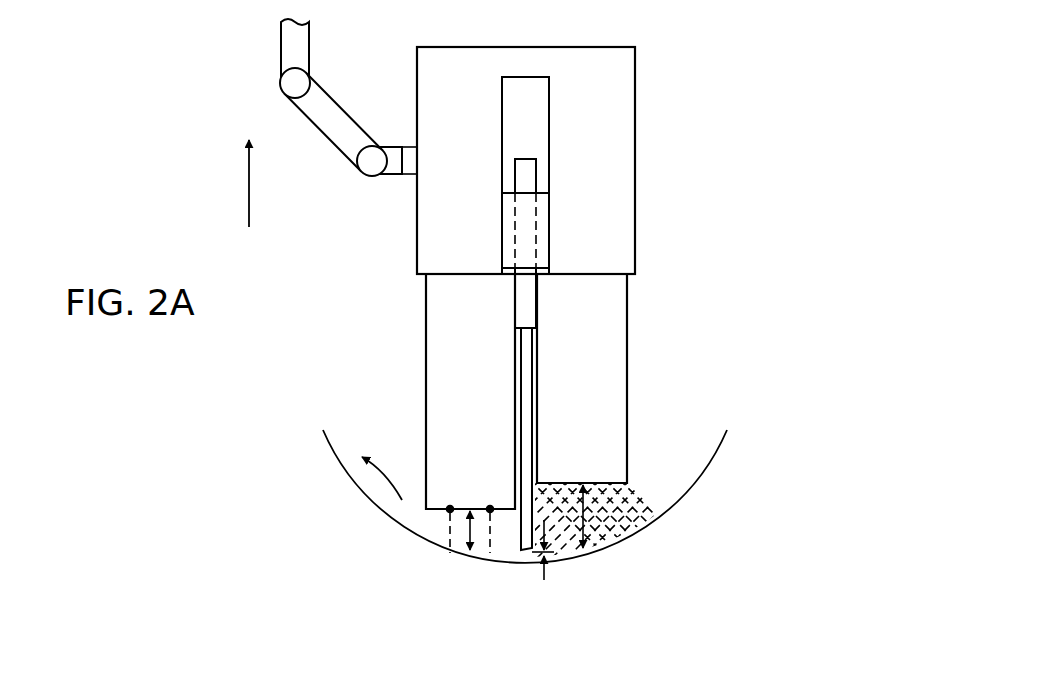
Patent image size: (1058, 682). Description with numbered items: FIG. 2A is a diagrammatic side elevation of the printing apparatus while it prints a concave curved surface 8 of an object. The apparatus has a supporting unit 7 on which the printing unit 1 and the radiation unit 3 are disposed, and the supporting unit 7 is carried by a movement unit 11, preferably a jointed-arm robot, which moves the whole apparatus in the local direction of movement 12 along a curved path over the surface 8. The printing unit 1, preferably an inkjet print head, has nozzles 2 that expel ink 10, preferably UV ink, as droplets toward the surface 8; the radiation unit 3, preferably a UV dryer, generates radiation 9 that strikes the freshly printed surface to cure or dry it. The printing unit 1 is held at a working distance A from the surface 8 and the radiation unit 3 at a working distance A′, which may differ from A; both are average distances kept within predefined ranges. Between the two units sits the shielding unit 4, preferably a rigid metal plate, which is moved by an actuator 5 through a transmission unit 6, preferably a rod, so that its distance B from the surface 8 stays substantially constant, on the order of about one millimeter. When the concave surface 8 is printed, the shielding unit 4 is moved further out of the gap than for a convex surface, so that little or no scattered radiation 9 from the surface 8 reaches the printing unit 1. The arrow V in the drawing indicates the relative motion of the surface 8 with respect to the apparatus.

The printing unit 1 is at (443, 340).
The nozzles 2 is at (490, 505).
The radiation unit 3 is at (598, 352).
The shielding unit 4 is at (532, 556).
The actuator 5 is at (542, 229).
The transmission unit 6 is at (524, 174).
The supporting unit 7 is at (613, 70).
The curved surface 8 is at (690, 487).
The radiation 9 is at (620, 525).
The ink 10 is at (450, 528).
The movement unit 11 is at (291, 50).
The direction of movement 12 is at (249, 190).
The working distance A is at (463, 535).
The working distance A′ is at (590, 522).
The distance B is at (557, 560).
The rotation direction V is at (383, 478).